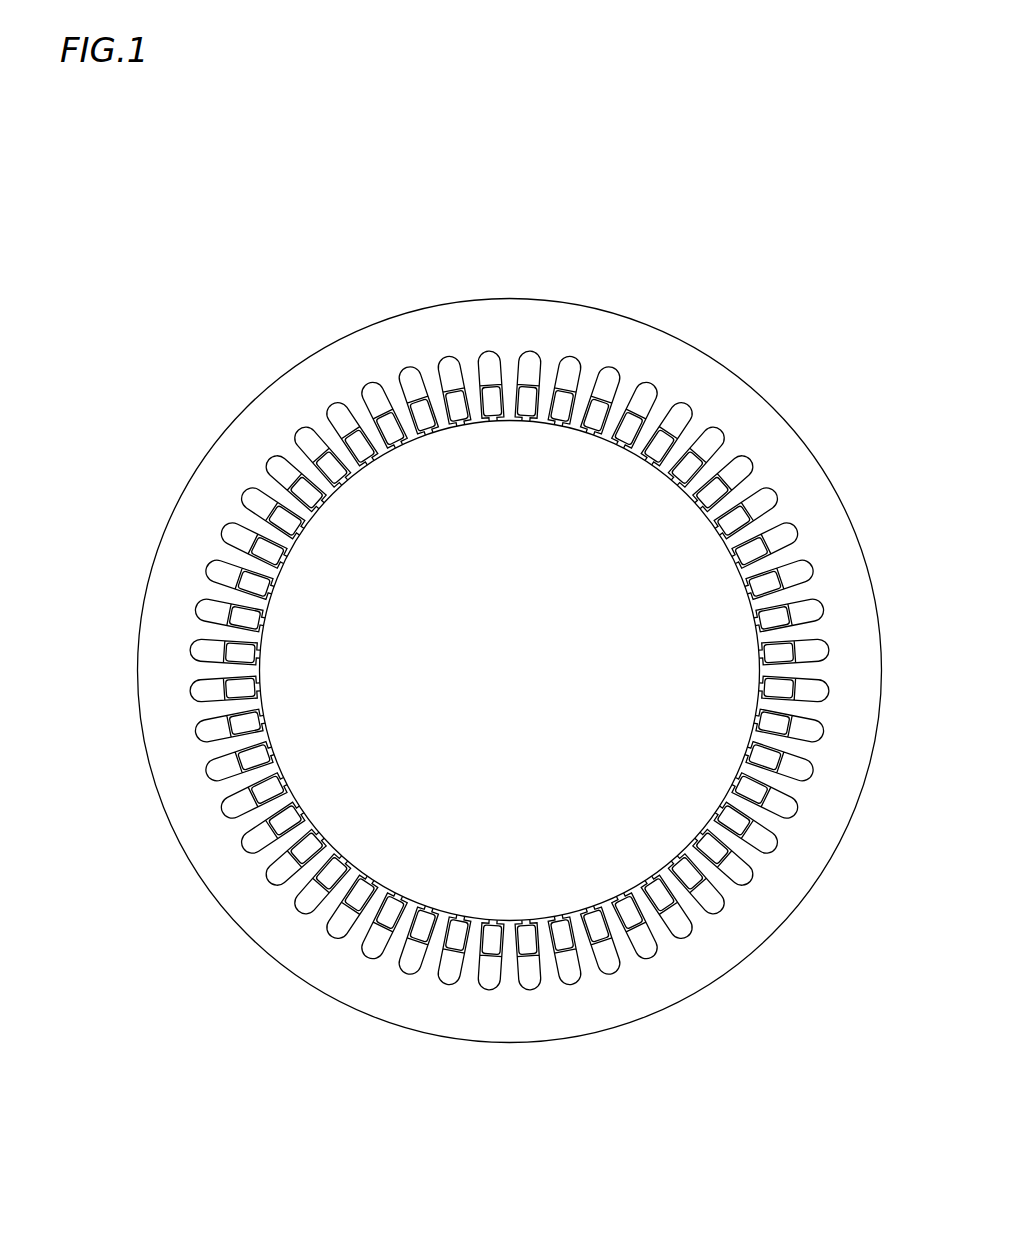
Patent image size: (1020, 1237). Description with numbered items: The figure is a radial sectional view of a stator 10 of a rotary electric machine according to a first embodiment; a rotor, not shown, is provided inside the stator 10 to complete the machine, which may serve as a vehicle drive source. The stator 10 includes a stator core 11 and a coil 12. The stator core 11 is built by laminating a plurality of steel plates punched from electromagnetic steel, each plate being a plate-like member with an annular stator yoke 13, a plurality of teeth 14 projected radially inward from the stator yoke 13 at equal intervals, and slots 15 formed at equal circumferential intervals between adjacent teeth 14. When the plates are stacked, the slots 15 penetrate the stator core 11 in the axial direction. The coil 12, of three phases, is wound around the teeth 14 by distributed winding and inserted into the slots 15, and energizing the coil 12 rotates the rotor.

The stator 10 is at (755, 262).
The stator core 11 is at (745, 372).
The coil 12 is at (733, 510).
The stator yoke 13 is at (806, 864).
The teeth 14 is at (722, 878).
The slots 15 is at (697, 938).